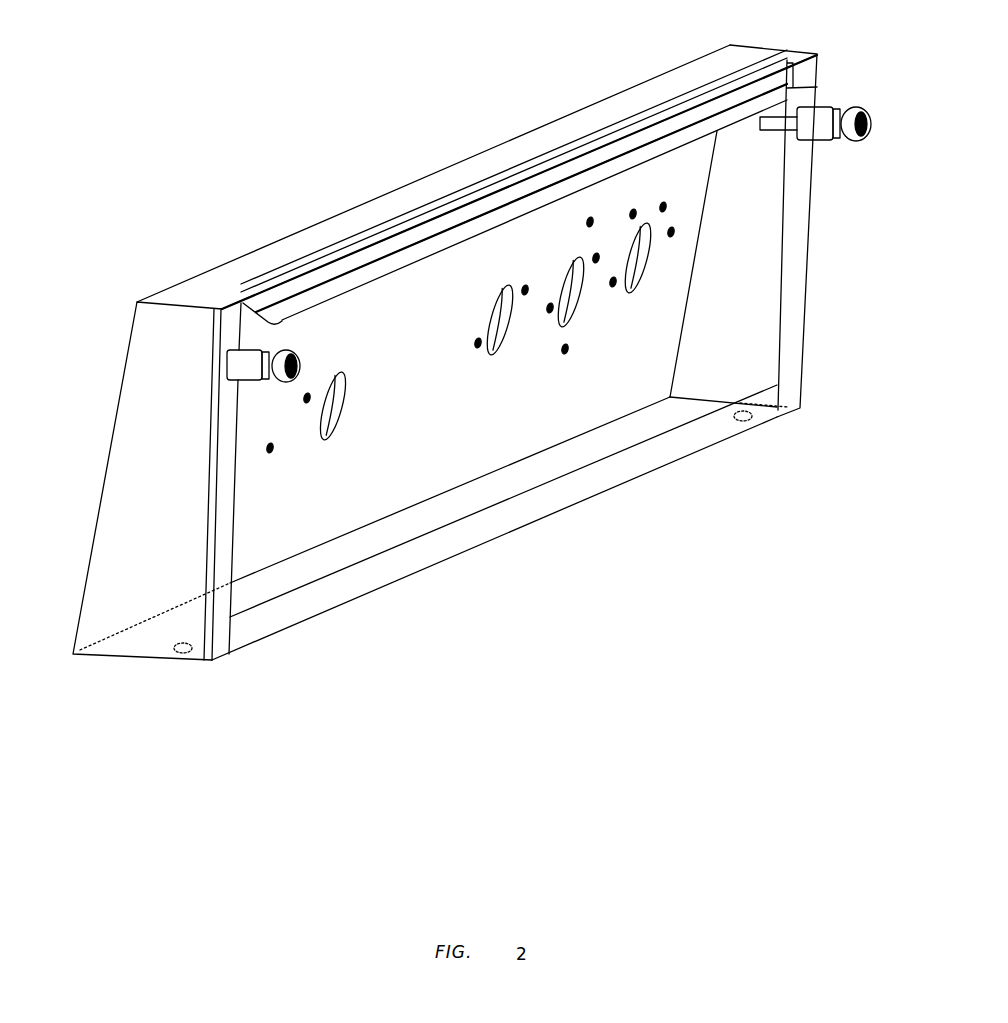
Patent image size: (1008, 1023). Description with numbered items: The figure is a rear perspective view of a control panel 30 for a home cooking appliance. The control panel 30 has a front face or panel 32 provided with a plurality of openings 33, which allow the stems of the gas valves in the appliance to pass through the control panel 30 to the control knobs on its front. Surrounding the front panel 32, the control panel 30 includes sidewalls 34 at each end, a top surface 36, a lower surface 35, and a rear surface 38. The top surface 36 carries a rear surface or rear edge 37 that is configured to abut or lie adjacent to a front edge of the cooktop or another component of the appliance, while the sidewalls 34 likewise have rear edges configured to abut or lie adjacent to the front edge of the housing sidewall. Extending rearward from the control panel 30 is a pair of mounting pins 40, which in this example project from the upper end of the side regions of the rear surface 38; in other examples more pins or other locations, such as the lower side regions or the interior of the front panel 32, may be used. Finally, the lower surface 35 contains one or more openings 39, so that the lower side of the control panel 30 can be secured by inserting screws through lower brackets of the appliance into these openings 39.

The control panel 30 is at (459, 376).
The front face or panel 32 is at (491, 292).
The openings 33 is at (492, 357).
The sidewalls 34 is at (130, 490).
The lower surface 35 is at (397, 524).
The top surface 36 is at (350, 233).
The rear surface or rear edge 37 is at (588, 147).
The rear surface 38 is at (270, 295).
The openings 39 is at (186, 653).
The mounting pins 40 is at (300, 360).